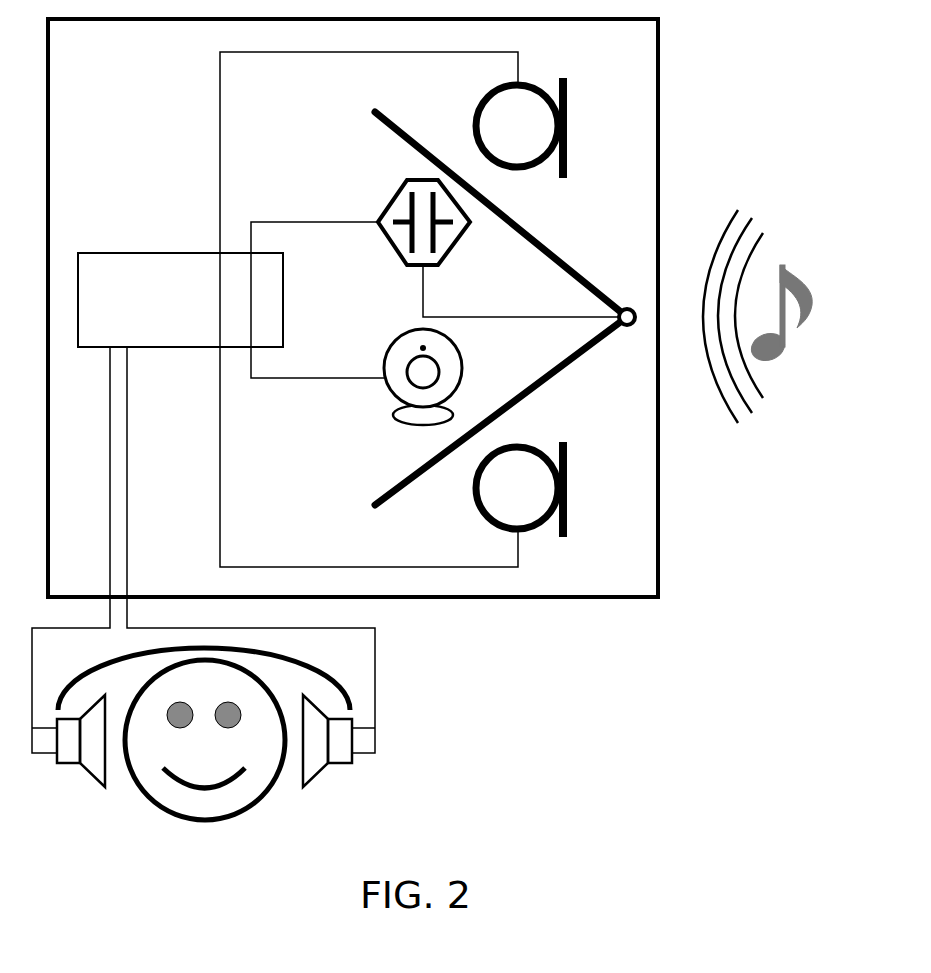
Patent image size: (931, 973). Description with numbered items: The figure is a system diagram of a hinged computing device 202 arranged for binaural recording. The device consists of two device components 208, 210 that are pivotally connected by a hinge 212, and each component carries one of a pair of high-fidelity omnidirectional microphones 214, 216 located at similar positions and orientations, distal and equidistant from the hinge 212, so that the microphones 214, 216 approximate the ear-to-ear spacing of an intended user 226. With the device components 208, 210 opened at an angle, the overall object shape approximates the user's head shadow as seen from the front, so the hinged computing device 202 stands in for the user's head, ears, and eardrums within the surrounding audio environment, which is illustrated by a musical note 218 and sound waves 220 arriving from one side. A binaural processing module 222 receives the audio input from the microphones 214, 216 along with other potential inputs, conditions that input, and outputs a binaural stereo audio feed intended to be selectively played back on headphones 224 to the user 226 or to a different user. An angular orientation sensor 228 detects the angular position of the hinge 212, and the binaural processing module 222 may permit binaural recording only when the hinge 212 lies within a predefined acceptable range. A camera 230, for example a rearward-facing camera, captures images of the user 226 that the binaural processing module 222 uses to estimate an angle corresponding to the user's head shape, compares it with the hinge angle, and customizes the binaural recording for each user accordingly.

The hinged computing device 202 is at (353, 308).
The device component 208 is at (560, 372).
The device component 210 is at (553, 252).
The hinge 212 is at (633, 308).
The microphone 214 is at (519, 489).
The microphone 216 is at (519, 128).
The musical note 218 is at (778, 240).
The sound waves 220 is at (738, 455).
The binaural processing module 222 is at (180, 300).
The headphones 224 is at (362, 776).
The user 226 is at (205, 740).
The angular orientation sensor 228 is at (393, 198).
The camera 230 is at (410, 333).